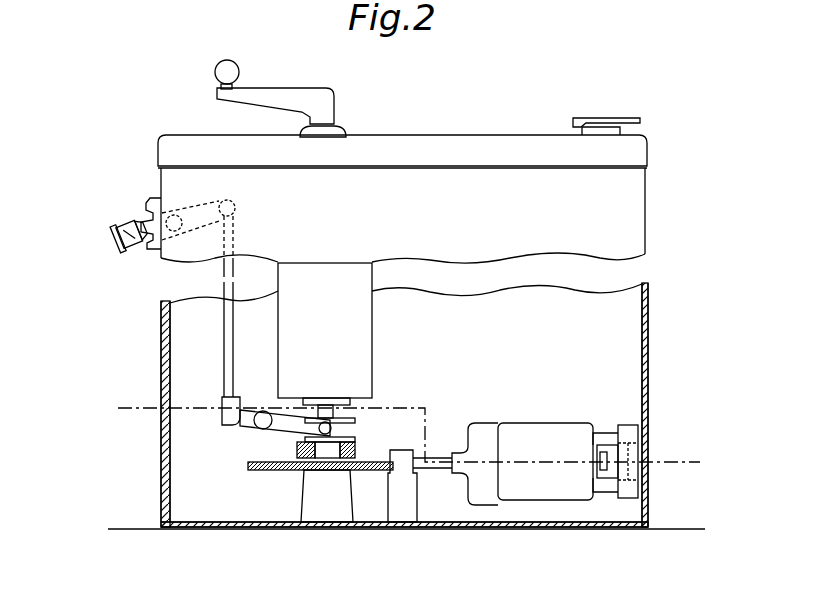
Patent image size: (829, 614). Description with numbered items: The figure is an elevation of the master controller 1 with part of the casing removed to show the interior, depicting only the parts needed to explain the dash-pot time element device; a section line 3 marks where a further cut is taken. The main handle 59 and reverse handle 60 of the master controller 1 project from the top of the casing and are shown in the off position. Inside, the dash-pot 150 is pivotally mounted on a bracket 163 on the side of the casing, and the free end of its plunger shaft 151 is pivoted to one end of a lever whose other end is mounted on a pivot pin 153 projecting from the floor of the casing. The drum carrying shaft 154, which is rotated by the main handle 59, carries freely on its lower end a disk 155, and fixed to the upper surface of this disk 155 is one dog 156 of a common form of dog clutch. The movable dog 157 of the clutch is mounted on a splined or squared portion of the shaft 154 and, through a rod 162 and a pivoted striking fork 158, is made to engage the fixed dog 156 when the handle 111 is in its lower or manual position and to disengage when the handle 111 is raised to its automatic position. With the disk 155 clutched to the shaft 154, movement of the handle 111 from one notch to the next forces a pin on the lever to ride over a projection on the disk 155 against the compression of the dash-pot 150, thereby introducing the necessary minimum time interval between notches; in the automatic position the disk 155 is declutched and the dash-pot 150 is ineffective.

The master controller 1 is at (596, 317).
The section line 3- 3 is at (408, 433).
The main handle 59 is at (290, 98).
The reverse handle 60 is at (590, 118).
The handle 111 is at (122, 248).
The dash-pot 150 is at (535, 448).
The plunger shaft 151 is at (438, 455).
The pivot pin 153 is at (400, 510).
The drum carrying shaft 154 is at (326, 408).
The disk 155 is at (328, 470).
The dog 156 is at (300, 470).
The movable dog 157 is at (303, 438).
The pivoted striking fork 158 is at (246, 417).
The rod 162 is at (229, 330).
The bracket 163 is at (632, 455).